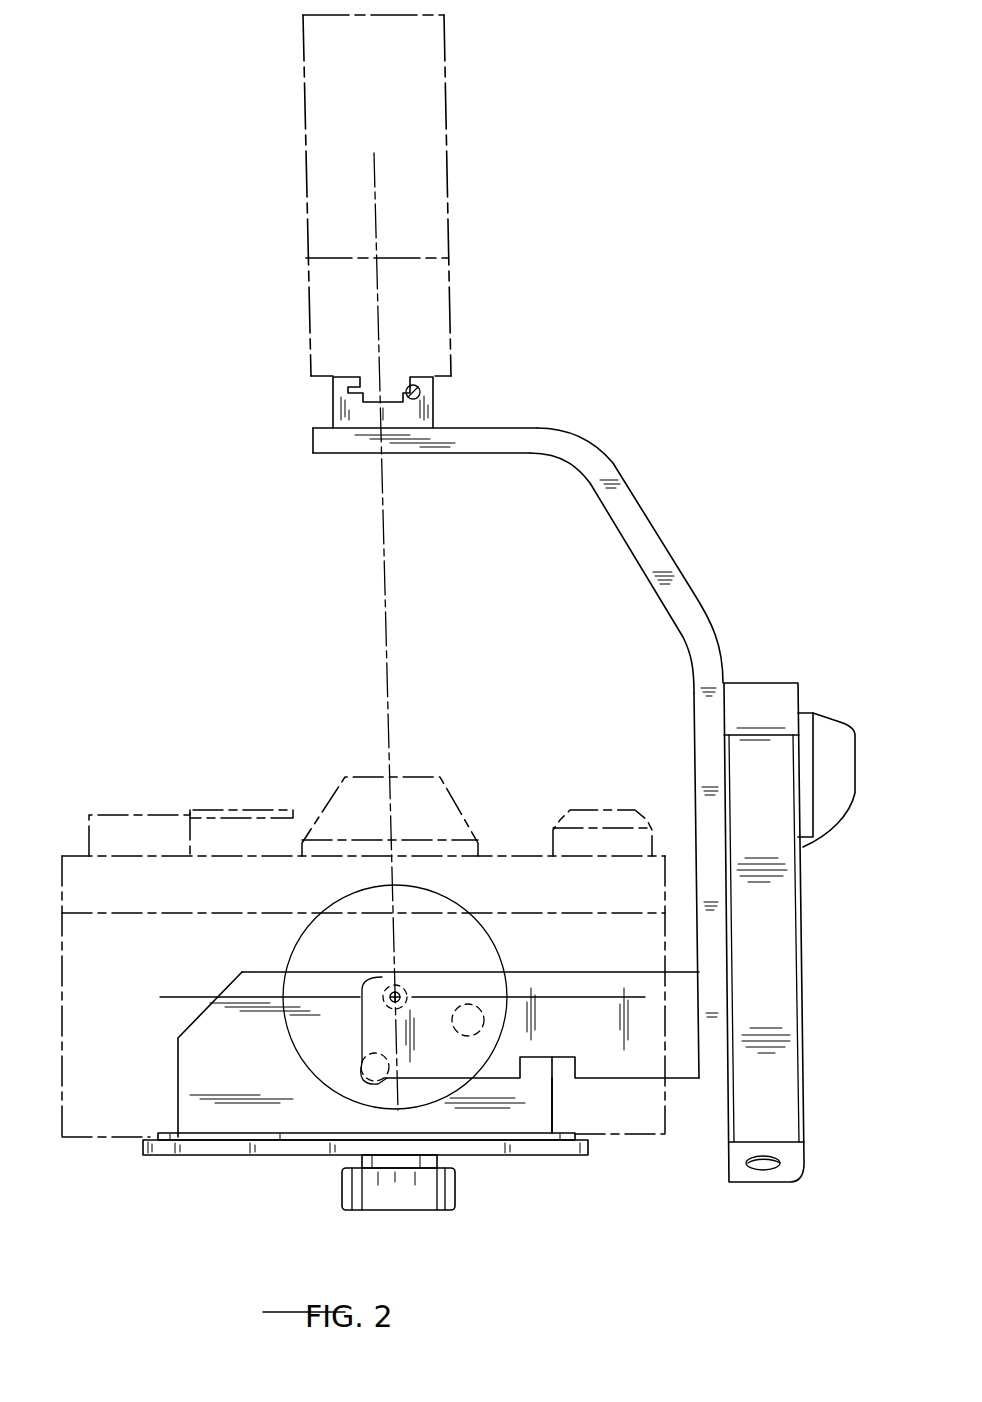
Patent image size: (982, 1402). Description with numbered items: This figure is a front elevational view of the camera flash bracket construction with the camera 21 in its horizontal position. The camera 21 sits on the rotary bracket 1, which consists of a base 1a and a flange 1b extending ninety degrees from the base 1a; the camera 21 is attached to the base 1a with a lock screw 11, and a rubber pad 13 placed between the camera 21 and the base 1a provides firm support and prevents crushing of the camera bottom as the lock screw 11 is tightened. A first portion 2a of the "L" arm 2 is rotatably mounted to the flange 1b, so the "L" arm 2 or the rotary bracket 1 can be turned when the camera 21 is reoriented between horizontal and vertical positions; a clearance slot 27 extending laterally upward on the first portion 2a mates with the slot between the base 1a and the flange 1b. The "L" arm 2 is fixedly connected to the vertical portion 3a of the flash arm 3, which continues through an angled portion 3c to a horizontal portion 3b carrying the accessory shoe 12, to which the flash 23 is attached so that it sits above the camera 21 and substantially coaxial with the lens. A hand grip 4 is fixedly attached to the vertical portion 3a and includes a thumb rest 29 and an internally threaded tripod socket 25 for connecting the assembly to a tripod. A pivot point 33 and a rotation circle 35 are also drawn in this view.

The rotary bracket 1 is at (313, 1111).
The base 1a is at (248, 1157).
The flange 1b is at (173, 1058).
The "L" arm 2 is at (430, 1056).
The first portion of "L" arm 2a is at (542, 972).
The flash arm 3 is at (553, 753).
The vertical portion of flash arm 3a is at (694, 807).
The horizontal portion of flash arm 3b is at (450, 457).
The angled portion of flash arm 3c is at (692, 593).
The hand grip 4 is at (812, 972).
The lock screw 11 is at (455, 1187).
The accessory shoe 12 is at (435, 407).
The rubber pad 13 is at (142, 1147).
The camera 21 is at (60, 870).
The flash 23 is at (446, 245).
The tripod socket 25 is at (773, 1172).
The clearance slot 27 is at (537, 1060).
The thumb rest 29 is at (820, 713).
The pivot screw 33 is at (399, 990).
The rotation circle 35 is at (310, 963).